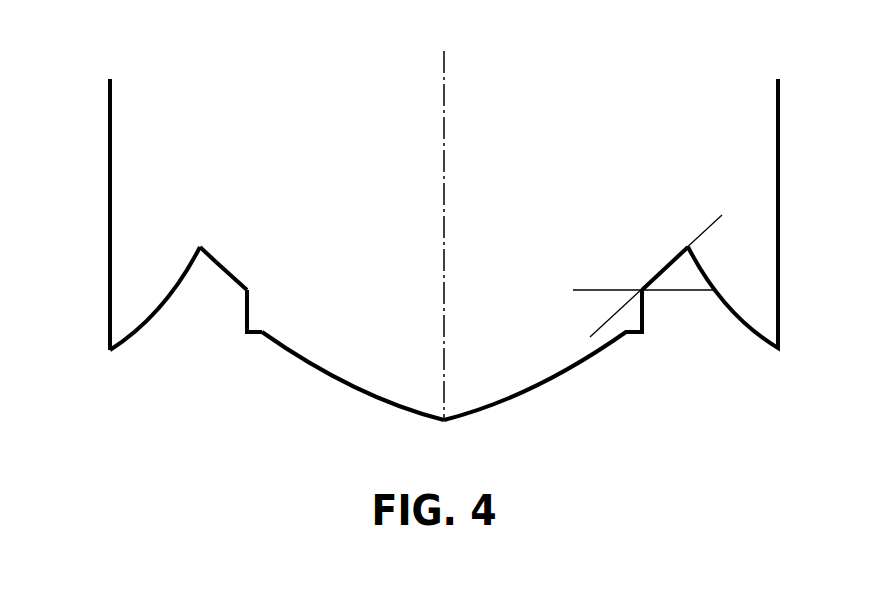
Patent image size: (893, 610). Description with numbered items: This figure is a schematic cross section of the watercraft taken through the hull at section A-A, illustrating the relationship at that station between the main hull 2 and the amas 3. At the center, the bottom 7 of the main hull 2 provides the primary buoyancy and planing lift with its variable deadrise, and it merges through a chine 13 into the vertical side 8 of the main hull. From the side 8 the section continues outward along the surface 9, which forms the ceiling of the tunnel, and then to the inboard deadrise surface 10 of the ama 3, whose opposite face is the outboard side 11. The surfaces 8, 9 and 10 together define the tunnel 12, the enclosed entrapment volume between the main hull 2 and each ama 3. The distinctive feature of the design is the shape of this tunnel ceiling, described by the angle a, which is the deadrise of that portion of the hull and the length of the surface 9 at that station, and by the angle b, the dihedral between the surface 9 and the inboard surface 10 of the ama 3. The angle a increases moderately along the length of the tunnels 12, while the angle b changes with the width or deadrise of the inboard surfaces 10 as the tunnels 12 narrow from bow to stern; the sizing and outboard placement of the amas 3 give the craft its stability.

The main hull 2 is at (510, 361).
The ama 3 is at (125, 294).
The main hull running bottom 7 is at (332, 374).
The side of main hull 8 is at (251, 304).
The surface 9 is at (237, 274).
The inboard surface 10 is at (159, 309).
The outboard side 11 is at (114, 225).
The tunnel 12 is at (206, 275).
The chine 13 is at (258, 336).
The angle a is at (656, 278).
The angle b is at (692, 254).